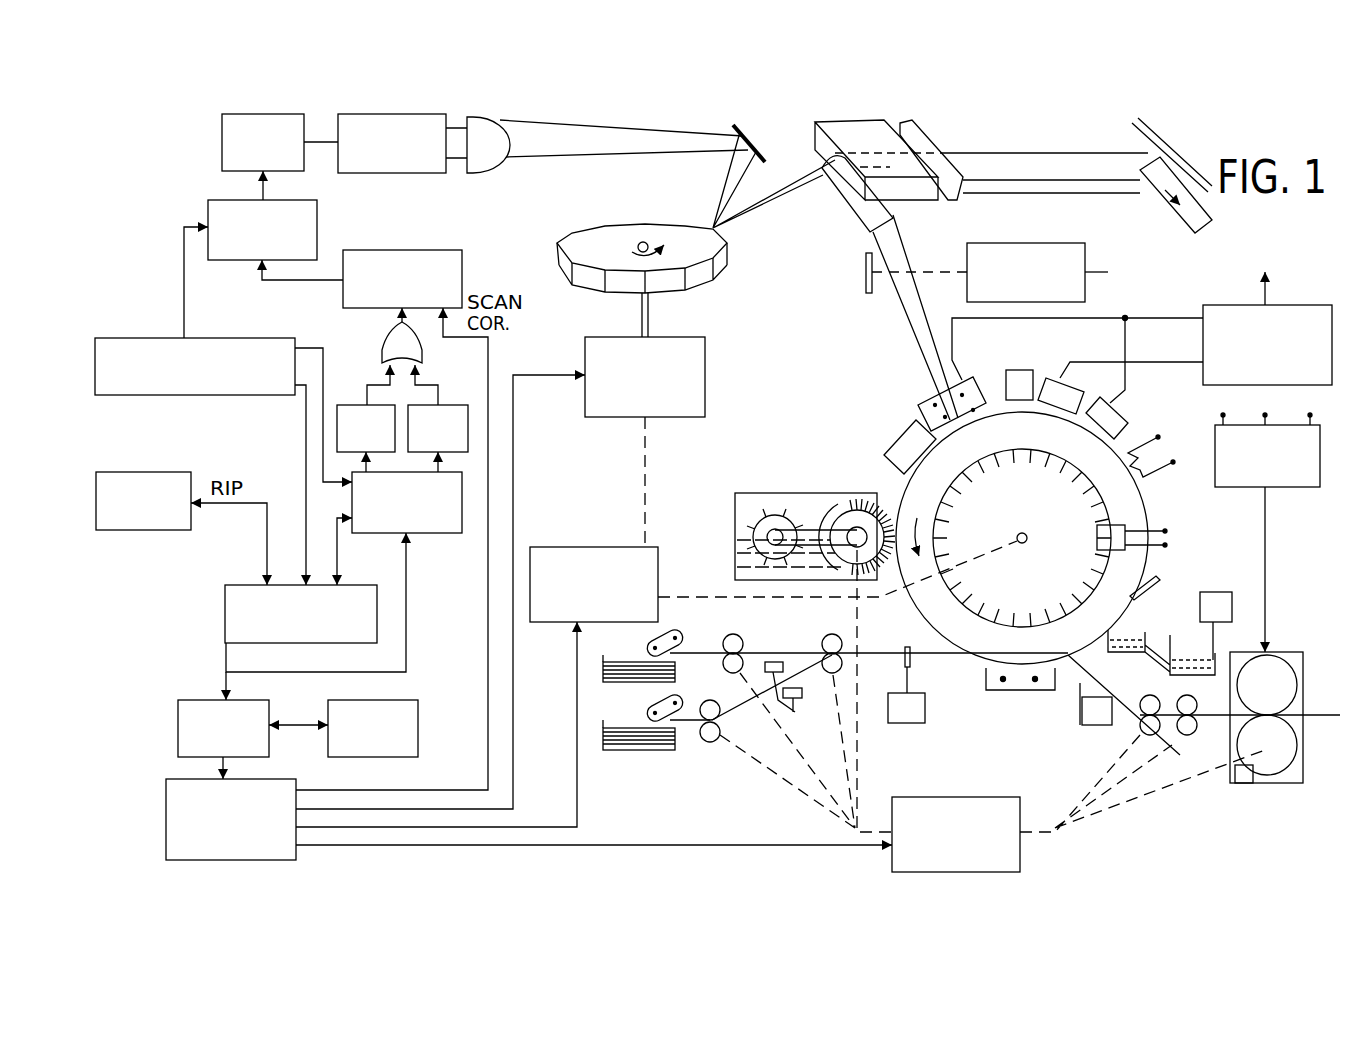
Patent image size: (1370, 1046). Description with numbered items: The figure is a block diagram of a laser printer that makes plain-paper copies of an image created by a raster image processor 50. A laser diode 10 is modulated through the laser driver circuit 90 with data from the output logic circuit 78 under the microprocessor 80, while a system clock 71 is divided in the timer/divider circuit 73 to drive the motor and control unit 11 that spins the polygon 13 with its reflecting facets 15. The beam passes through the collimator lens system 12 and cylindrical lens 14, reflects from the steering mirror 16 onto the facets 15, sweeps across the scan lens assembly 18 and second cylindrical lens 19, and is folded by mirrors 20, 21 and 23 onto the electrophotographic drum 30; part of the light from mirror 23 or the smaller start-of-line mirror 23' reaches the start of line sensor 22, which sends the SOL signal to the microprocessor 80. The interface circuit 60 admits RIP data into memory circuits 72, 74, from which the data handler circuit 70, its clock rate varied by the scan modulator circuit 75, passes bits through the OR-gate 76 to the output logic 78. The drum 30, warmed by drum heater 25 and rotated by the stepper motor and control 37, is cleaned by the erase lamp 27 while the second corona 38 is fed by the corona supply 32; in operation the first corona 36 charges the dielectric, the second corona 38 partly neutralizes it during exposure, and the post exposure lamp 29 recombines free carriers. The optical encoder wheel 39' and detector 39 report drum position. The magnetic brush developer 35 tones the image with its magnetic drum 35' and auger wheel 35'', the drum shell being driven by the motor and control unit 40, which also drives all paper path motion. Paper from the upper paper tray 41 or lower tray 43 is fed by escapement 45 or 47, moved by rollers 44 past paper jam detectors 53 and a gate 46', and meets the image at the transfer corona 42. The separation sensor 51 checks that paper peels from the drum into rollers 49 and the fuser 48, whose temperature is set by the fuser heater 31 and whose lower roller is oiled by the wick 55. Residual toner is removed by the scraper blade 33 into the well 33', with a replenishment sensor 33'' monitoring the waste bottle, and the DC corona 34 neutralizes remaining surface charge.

The laser diode 10 is at (222, 141).
The collimator lens system 12 is at (394, 173).
The cylindrical lens 14 is at (508, 122).
The steering mirror 16 is at (750, 136).
The polygon 13 is at (605, 226).
The reflecting facets 15 is at (708, 273).
The motor and control unit 11 is at (705, 350).
The laser driver circuit 90 is at (208, 207).
The output logic circuit 78 is at (420, 250).
The microprocessor 80 is at (222, 338).
The OR-gate 76 is at (384, 345).
The memory circuit 72 is at (360, 408).
The memory circuit 74 is at (440, 410).
The data handler circuit 70 is at (440, 533).
The raster image processor 50 is at (160, 472).
The interface circuit 60 is at (222, 610).
The system clock 71 is at (178, 710).
The scan modulator circuit 75 is at (418, 720).
The timer/divider circuit 73 is at (166, 797).
The stepper motor and control 37 is at (588, 547).
The motor and control unit 40 is at (975, 797).
The scan lens assembly 18 is at (876, 160).
The second cylindrical lens 19 is at (930, 142).
The fold mirror 20 is at (1178, 158).
The fold mirror 21 is at (1208, 227).
The fold mirror 23 is at (876, 288).
The start-of-line mirror 23' is at (876, 291).
The start of line sensor 22 is at (1085, 255).
The corona supply 32 is at (1290, 305).
The fuser heater 31 is at (1300, 487).
The electrophotographic drum 30 is at (1140, 500).
The optical encoder wheel 39' is at (1022, 525).
The detector 39 is at (1126, 529).
The second corona 38 is at (966, 363).
The post exposure lamp 29 is at (908, 428).
The erase lamp 27 is at (1013, 370).
The first corona 36 is at (1068, 382).
The DC corona 34 is at (1115, 405).
The drum heater 25 is at (1136, 449).
The magnetic brush developer 35 is at (806, 515).
The auger wheel 35'' is at (775, 508).
The magnetic drum 35' is at (857, 513).
The rollers 44 is at (832, 634).
The escapement 45 is at (675, 635).
The escapement 47 is at (680, 700).
The upper paper tray 41 is at (617, 690).
The lower tray 43 is at (640, 750).
The paper jam detectors 53 is at (796, 694).
The sensor 46' is at (929, 698).
The transfer corona 42 is at (1010, 690).
The separation sensor 51 is at (1080, 720).
The rollers 49 is at (1180, 740).
The fuser 48 is at (1280, 652).
The wick 55 is at (1250, 783).
The scraper blade 33 is at (1161, 576).
The well 33' is at (1161, 638).
The replenishment sensor 33'' is at (1233, 606).